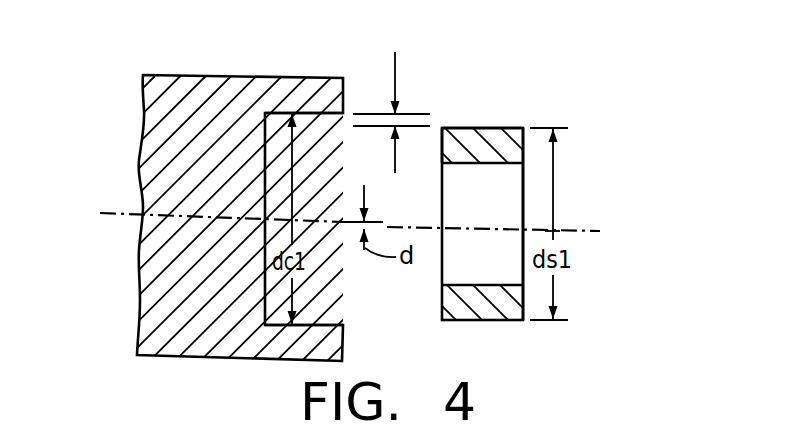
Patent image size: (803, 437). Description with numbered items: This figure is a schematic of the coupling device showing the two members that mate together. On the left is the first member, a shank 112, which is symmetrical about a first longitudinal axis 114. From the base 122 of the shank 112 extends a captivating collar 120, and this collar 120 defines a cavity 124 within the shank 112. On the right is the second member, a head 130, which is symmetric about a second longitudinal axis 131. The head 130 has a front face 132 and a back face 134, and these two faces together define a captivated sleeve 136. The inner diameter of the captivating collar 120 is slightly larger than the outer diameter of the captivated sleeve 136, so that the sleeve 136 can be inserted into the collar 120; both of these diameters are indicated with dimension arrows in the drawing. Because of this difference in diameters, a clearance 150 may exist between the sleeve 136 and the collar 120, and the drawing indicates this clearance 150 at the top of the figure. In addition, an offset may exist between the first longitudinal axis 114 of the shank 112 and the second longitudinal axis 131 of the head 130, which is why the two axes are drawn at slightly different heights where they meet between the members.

The shank 112 is at (231, 63).
The first longitudinal axis 114 is at (115, 212).
The captivating collar 120 is at (310, 78).
The base 122 is at (255, 88).
The cavity 124 is at (322, 297).
The head 130 is at (492, 118).
The second longitudinal axis 131 is at (570, 232).
The front face 132 is at (508, 140).
The back face 134 is at (440, 137).
The captivated sleeve 136 is at (522, 127).
The clearance 150 is at (396, 80).